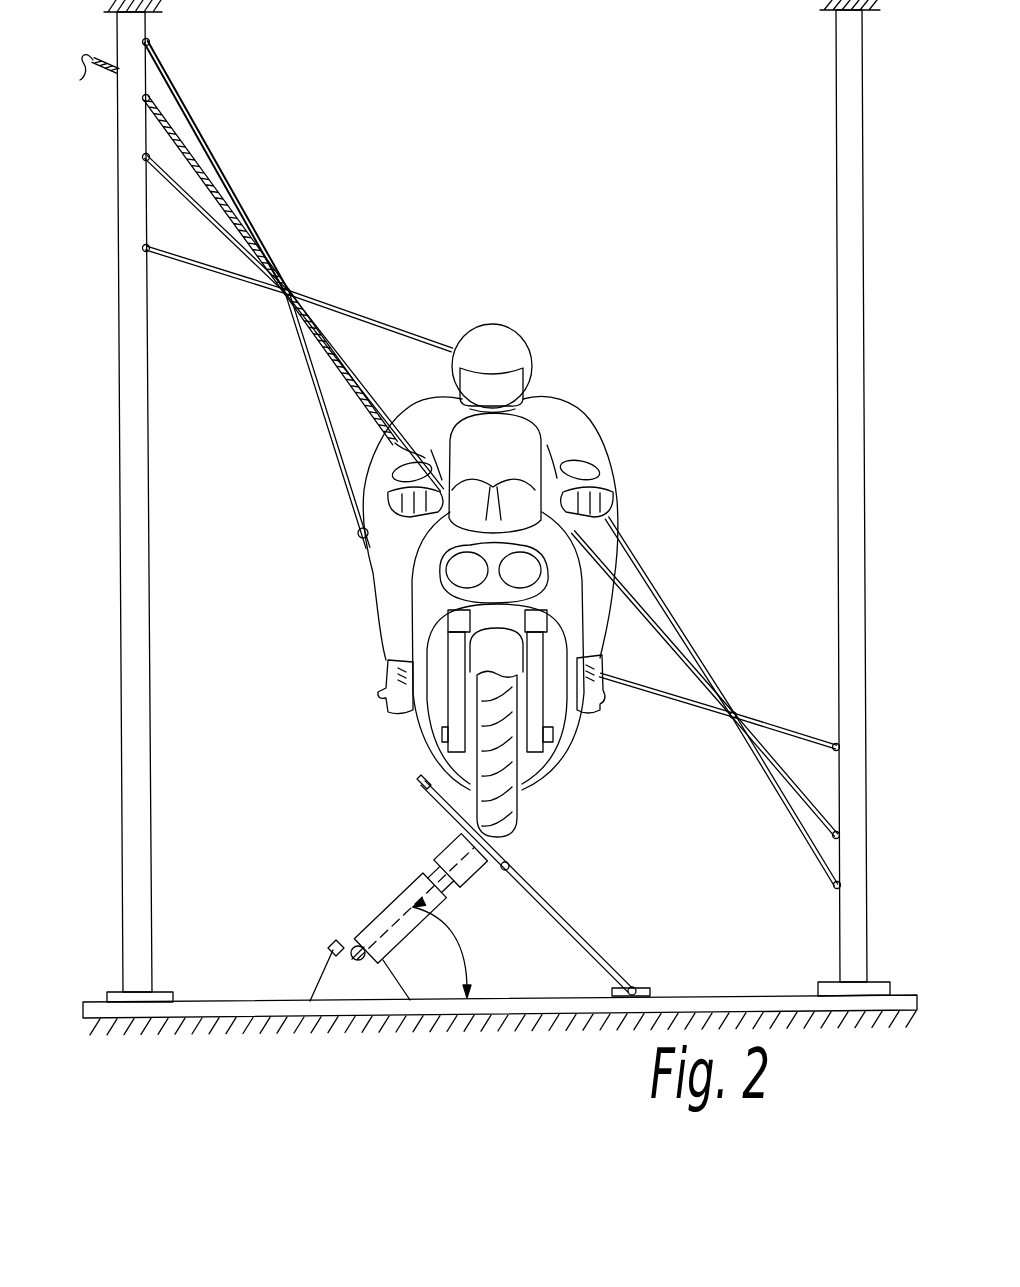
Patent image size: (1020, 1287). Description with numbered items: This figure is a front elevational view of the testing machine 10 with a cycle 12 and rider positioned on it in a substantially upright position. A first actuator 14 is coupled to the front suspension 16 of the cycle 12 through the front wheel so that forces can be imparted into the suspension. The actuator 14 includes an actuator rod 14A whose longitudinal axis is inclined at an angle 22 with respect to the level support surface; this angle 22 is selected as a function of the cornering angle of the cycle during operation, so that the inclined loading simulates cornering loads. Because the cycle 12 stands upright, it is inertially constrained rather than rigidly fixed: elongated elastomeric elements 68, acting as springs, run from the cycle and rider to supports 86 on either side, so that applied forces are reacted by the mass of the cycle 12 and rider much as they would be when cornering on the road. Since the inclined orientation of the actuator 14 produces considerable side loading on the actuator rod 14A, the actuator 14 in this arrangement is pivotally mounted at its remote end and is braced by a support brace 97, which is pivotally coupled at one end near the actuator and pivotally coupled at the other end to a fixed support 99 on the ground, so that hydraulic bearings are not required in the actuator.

The testing machine 10 is at (634, 365).
The cycle 12 is at (660, 554).
The first actuator 14 is at (392, 895).
The actuator rod 14A is at (437, 862).
The front suspension 16 is at (584, 765).
The angle 22 is at (458, 943).
The elongated elastomeric elements 68 is at (306, 228).
The supports 86 is at (146, 433).
The support brace 97 is at (550, 906).
The fixed support 99 is at (637, 987).